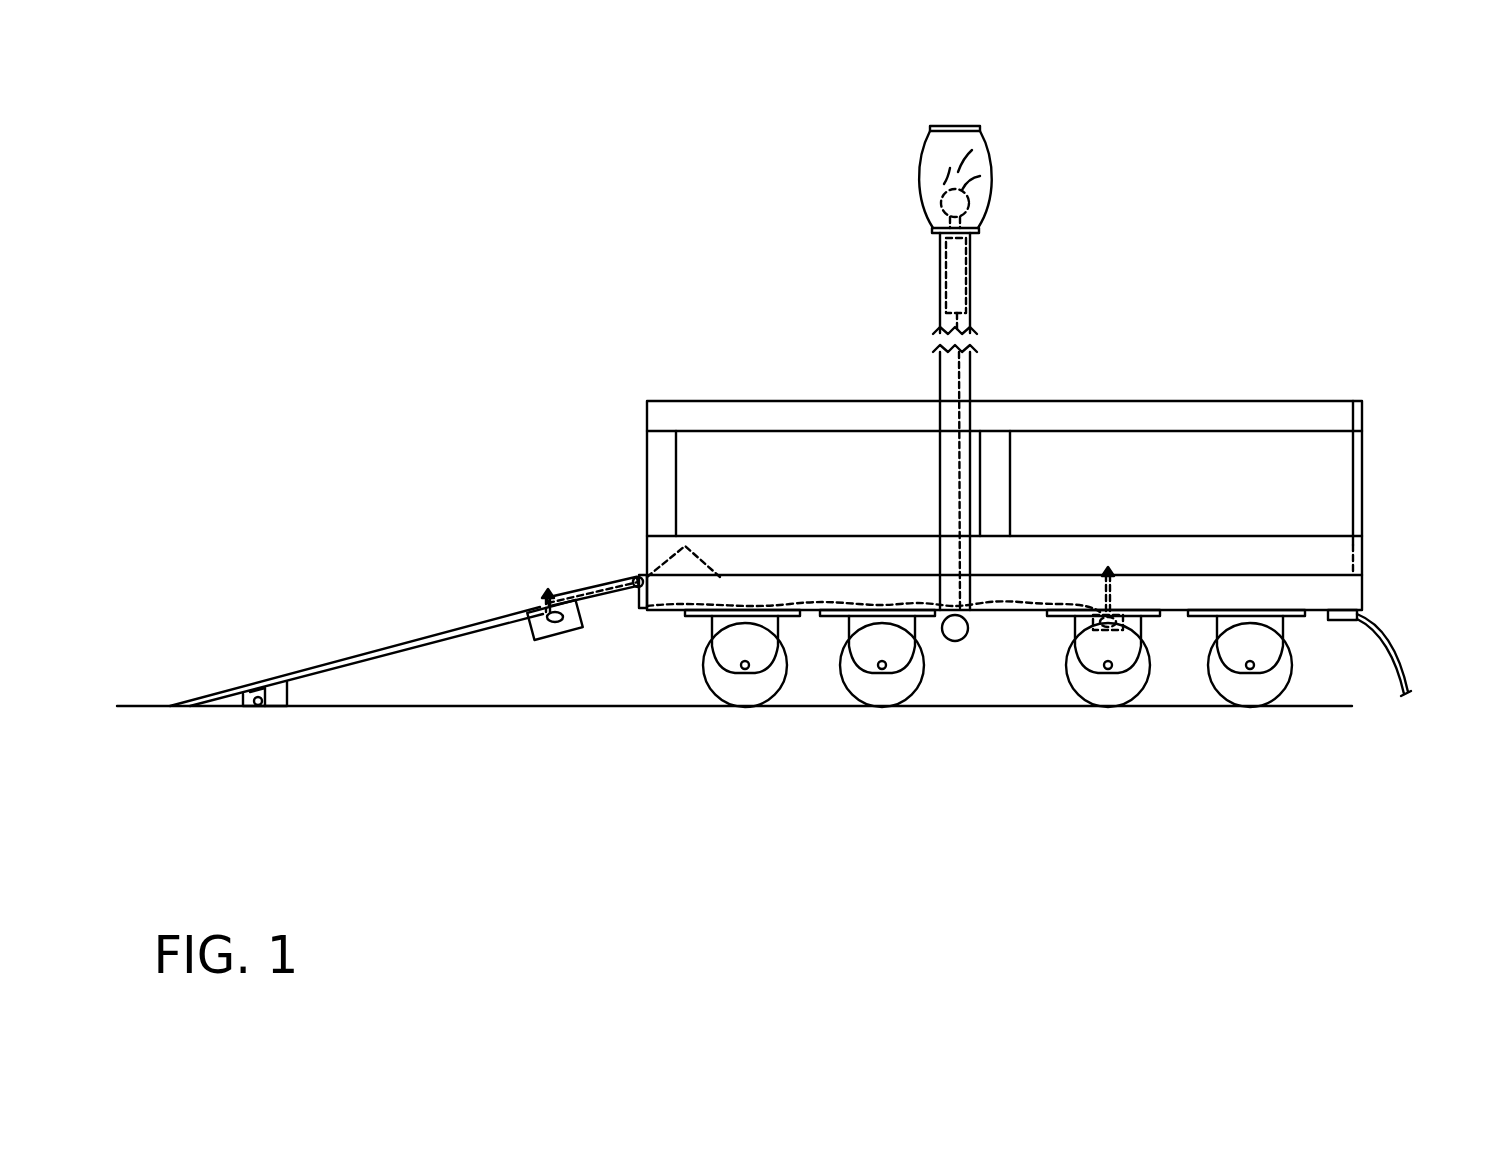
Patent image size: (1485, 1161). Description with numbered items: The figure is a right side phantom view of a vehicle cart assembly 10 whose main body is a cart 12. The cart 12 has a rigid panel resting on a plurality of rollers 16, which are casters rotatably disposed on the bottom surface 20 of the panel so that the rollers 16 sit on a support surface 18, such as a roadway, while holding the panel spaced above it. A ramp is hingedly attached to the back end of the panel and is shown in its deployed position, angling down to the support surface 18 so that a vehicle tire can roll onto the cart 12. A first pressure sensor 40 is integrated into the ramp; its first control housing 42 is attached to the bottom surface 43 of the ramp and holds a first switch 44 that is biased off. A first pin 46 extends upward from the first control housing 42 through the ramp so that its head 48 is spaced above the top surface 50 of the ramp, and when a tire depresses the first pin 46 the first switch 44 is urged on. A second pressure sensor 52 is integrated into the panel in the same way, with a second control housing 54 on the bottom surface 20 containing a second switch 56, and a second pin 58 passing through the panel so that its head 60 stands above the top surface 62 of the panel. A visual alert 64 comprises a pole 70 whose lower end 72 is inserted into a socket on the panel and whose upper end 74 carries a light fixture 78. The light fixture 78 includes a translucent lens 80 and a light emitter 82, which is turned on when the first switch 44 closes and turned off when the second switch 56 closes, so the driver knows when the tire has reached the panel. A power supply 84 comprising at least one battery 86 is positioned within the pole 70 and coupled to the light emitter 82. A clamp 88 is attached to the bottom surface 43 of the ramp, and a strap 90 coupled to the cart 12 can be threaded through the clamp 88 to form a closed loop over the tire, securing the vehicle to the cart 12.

The vehicle cart assembly 10 is at (275, 207).
The cart 12 is at (1407, 339).
The plurality of rollers 16 is at (765, 682).
The support surface 18 is at (428, 705).
The bottom surface 20 is at (1313, 617).
The first pressure sensor 40 is at (558, 668).
The first control housing 42 is at (533, 635).
The bottom surface 43 is at (338, 672).
The first switch 44 is at (527, 620).
The first pin 46 is at (560, 608).
The head 48 is at (546, 594).
The top surface 50 is at (310, 667).
The second pressure sensor 52 is at (1093, 668).
The second control housing 54 is at (1097, 630).
The second switch 56 is at (1128, 618).
The second pin 58 is at (1104, 592).
The head 60 is at (1108, 612).
The top surface 62 is at (843, 536).
The visual alert 64 is at (828, 139).
The pole 70 is at (942, 260).
The lower end 72 is at (952, 641).
The upper end 74 is at (978, 222).
The light fixture 78 is at (980, 128).
The lens 80 is at (922, 203).
The light emitter 82 is at (947, 197).
The power supply 84 is at (958, 313).
The battery 86 is at (950, 287).
The clamp 88 is at (272, 708).
The strap 90 is at (1407, 667).